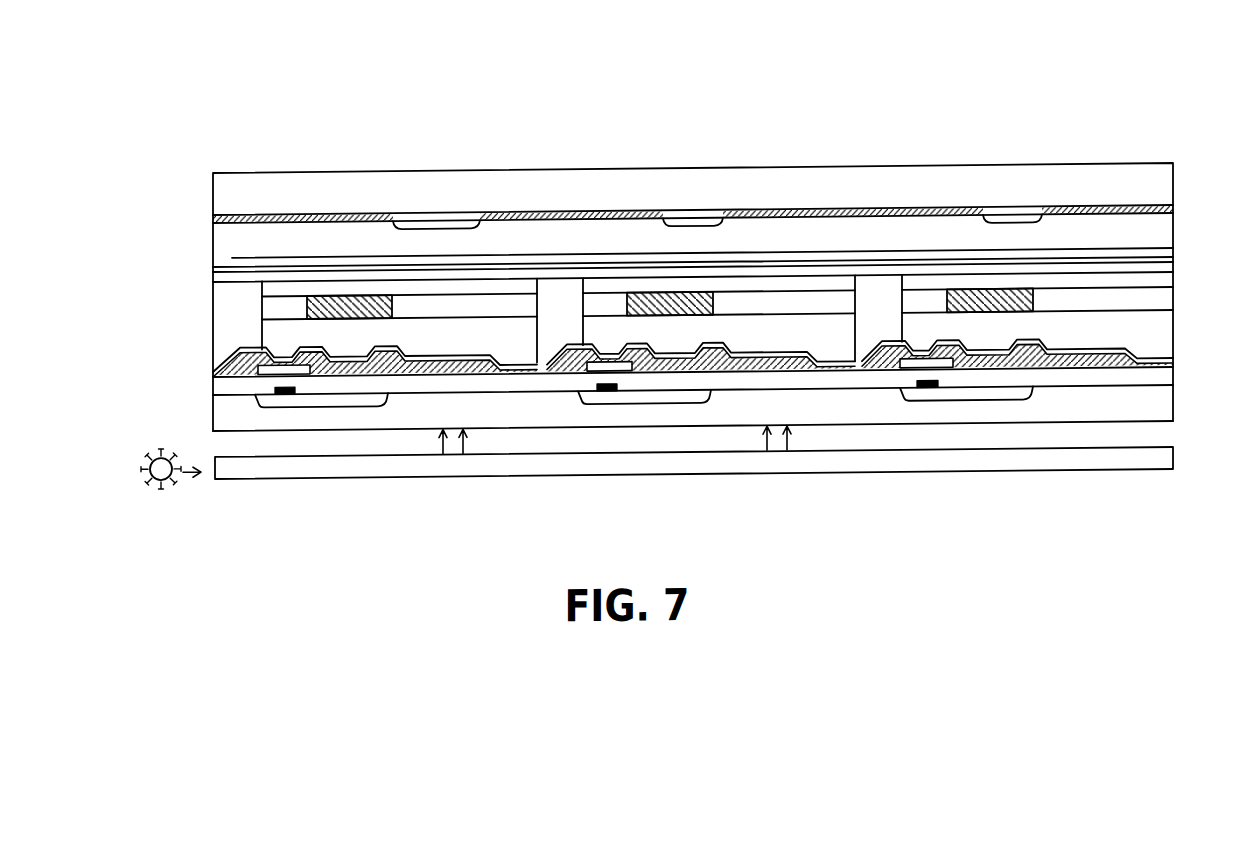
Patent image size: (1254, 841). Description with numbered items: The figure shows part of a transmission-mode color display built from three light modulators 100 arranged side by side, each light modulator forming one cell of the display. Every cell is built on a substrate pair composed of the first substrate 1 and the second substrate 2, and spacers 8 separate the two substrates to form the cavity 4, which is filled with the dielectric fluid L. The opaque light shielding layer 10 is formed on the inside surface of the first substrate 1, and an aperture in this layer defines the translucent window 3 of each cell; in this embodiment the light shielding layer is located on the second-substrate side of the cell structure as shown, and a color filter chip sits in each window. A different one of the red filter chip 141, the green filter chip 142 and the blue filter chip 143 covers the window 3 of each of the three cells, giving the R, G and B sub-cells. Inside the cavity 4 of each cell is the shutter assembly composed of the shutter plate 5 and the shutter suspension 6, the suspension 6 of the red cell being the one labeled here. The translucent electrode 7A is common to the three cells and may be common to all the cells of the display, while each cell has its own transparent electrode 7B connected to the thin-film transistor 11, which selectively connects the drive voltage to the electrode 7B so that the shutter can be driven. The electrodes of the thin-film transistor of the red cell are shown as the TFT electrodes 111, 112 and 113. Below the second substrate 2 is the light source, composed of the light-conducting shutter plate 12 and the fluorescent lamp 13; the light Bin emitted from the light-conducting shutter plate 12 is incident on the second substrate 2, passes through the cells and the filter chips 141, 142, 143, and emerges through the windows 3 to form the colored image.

The light modulator 100 is at (1037, 107).
The first substrate 1 is at (366, 191).
The second substrate 2 is at (1161, 410).
The window 3 is at (441, 184).
The cavity 4 is at (1150, 353).
The shutter plate 5 is at (326, 304).
The shutter suspension 6 is at (286, 304).
The translucent electrode 7A is at (232, 258).
The transparent electrode 7B is at (475, 374).
The spacers 8 is at (232, 304).
The light shielding layer 10 is at (637, 213).
The thin-film transistor 11 is at (318, 410).
The light-conducting shutter plate 12 is at (1135, 463).
The fluorescent lamp 13 is at (167, 483).
The TFT electrode 111 is at (222, 368).
The TFT electrode 112 is at (270, 391).
The TFT electrode 113 is at (378, 377).
The red filter chip 141 is at (457, 213).
The green filter chip 142 is at (773, 213).
The blue filter chip 143 is at (1095, 213).
The dielectric fluid L is at (1162, 334).
The light Bin is at (475, 445).